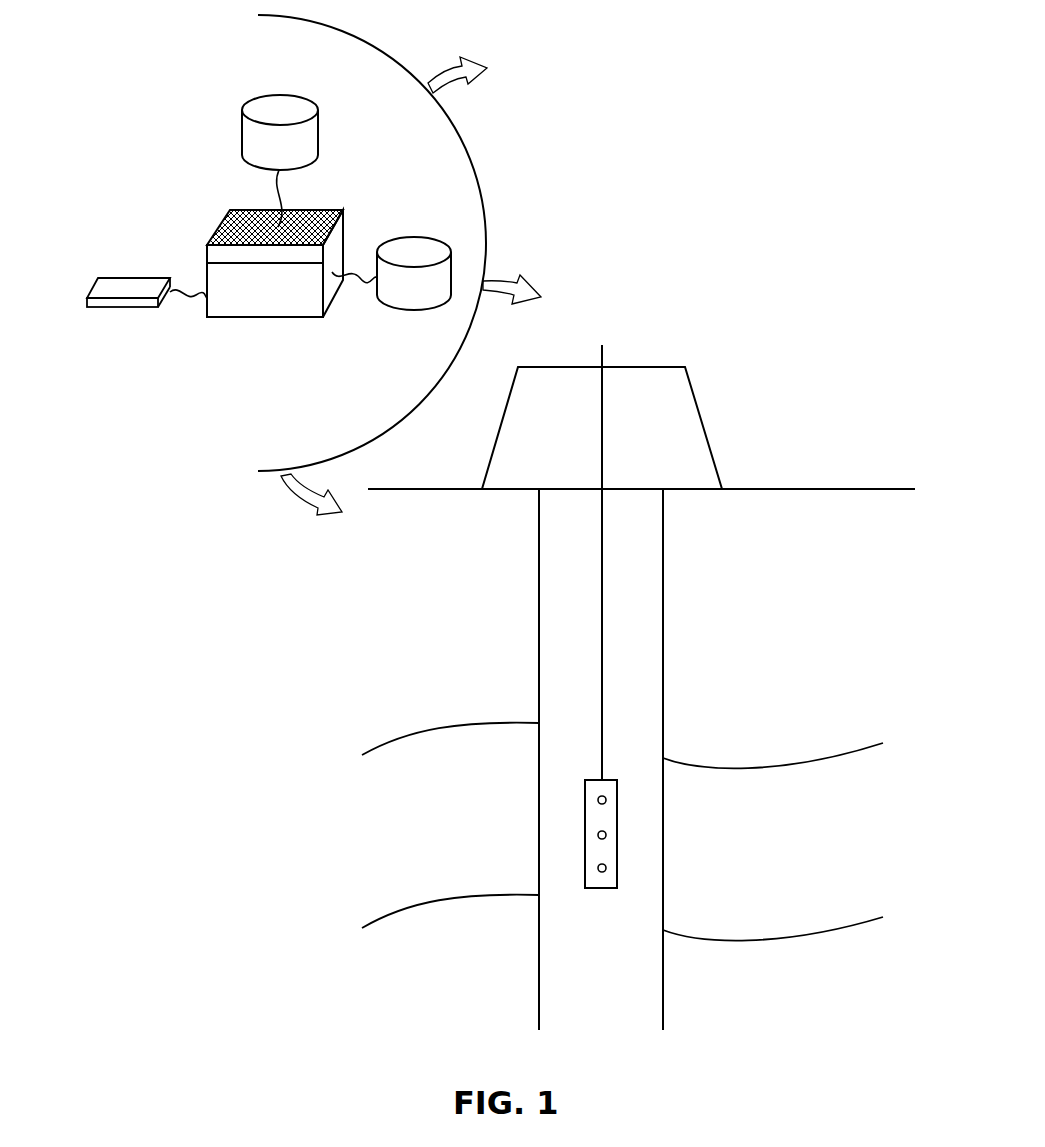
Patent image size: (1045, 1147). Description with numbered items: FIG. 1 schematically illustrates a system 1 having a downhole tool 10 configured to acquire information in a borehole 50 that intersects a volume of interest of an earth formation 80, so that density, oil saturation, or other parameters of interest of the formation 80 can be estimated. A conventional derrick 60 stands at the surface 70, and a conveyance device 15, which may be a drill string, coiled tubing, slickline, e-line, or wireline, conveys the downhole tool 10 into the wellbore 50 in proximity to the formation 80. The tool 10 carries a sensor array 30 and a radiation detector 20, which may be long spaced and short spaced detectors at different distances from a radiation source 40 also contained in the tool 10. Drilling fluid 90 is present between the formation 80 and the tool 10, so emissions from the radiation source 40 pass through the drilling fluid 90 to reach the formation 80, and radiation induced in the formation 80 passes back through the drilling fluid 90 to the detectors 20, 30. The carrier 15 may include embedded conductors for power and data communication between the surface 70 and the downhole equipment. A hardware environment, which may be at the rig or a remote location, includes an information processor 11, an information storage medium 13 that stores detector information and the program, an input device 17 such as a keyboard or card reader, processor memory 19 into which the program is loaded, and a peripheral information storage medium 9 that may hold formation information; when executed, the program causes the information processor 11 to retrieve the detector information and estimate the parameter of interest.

The system 1 is at (831, 198).
The peripheral information storage medium 9 is at (438, 248).
The downhole tool 10 is at (585, 788).
The information processor 11 is at (227, 318).
The information storage medium 13 is at (252, 110).
The conveyance device 15 is at (602, 642).
The input device 17 is at (103, 313).
The processor memory 19 is at (232, 210).
The detector 20 is at (607, 800).
The sensor array 30 is at (607, 835).
The radiation source 40 is at (607, 868).
The borehole 50 is at (663, 565).
The derrick 60 is at (667, 367).
The ground surface 70 is at (702, 490).
The earth formation 80 is at (763, 788).
The drilling fluid 90 is at (565, 880).